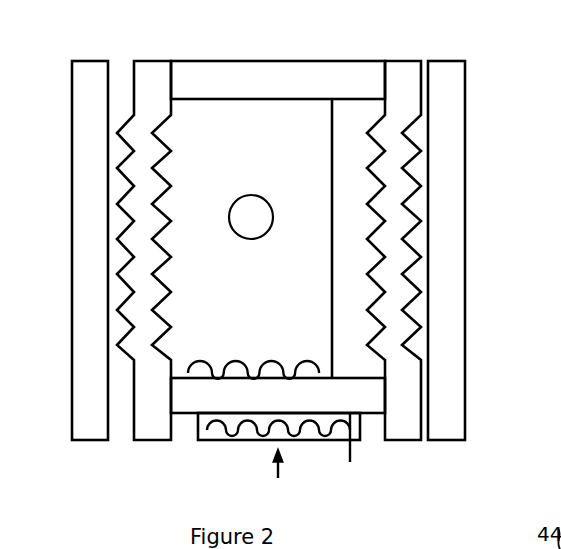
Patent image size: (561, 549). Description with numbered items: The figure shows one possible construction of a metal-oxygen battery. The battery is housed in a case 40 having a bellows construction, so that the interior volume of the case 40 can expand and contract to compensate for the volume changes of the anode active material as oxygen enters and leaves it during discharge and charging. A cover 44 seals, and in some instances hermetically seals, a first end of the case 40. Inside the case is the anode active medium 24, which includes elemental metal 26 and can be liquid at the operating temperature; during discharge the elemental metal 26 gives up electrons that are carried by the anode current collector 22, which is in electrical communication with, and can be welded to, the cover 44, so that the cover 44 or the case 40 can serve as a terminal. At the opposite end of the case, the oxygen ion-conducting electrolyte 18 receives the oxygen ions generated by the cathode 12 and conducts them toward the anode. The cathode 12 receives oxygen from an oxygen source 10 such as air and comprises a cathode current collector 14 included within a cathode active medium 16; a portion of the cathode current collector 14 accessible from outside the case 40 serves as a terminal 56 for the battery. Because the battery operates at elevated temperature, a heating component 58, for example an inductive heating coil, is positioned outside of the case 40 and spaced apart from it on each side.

The oxygen source 10 is at (279, 480).
The cathode 12 is at (362, 416).
The cathode current collector 14 is at (250, 418).
The cathode active medium 16 is at (199, 423).
The oxygen ion-conducting electrolyte 18 is at (177, 402).
The anode current collector 22 is at (332, 162).
The anode active medium 24 is at (180, 272).
The elemental metal 26 is at (235, 236).
The case 40 is at (144, 158).
The cover 44 is at (243, 80).
The terminal 56 is at (349, 447).
The heating component 58 is at (92, 80).